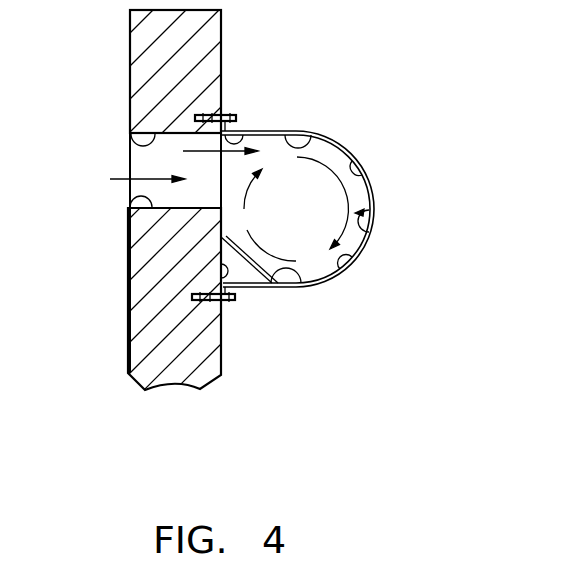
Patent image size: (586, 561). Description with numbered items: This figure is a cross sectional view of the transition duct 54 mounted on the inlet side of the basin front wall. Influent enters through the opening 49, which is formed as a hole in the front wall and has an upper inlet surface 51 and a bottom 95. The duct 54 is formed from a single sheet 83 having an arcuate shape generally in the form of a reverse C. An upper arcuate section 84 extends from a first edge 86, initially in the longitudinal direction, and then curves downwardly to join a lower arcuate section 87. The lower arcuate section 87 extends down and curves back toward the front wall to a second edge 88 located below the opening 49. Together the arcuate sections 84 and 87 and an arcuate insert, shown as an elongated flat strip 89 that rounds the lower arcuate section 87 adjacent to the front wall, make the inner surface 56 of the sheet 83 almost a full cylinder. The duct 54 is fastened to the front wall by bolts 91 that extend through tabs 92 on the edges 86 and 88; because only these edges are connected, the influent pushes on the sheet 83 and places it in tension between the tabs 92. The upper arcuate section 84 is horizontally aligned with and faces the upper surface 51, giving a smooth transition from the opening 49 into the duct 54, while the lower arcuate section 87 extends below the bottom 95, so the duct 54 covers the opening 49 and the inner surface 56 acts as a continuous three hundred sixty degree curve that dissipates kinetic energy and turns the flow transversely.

The opening 49 is at (148, 164).
The upper inlet surface 51 is at (128, 139).
The transition duct 54 is at (380, 200).
The inner surface 56 is at (352, 230).
The single sheet 83 is at (314, 134).
The upper arcuate section 84 is at (354, 156).
The first edge 86 is at (246, 133).
The lower arcuate section 87 is at (356, 262).
The second edge 88 is at (226, 262).
The elongated flat strip 89 is at (304, 289).
The bolts 91 is at (200, 116).
The tabs 92 is at (224, 118).
The bottom of the opening 95 is at (142, 192).